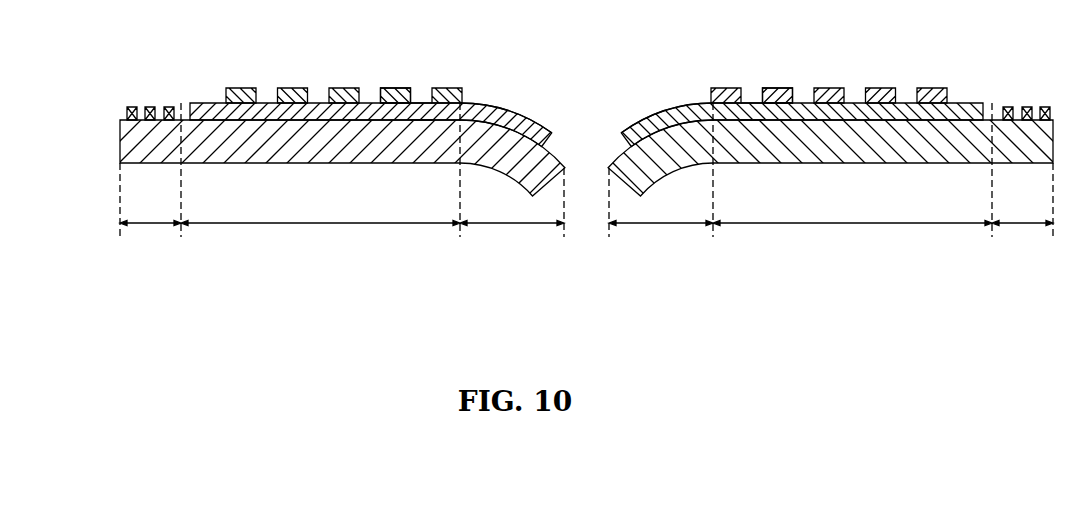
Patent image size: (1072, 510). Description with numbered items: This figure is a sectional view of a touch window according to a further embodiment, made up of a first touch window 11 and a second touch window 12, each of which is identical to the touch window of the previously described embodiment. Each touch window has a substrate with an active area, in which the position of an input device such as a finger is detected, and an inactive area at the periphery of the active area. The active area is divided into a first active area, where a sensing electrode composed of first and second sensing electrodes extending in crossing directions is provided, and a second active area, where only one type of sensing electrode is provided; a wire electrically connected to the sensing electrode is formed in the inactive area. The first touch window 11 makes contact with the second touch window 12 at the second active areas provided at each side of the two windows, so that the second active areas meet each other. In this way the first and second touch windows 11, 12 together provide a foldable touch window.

The first touch window 11 is at (175, 14).
The second touch window 12 is at (976, 14).